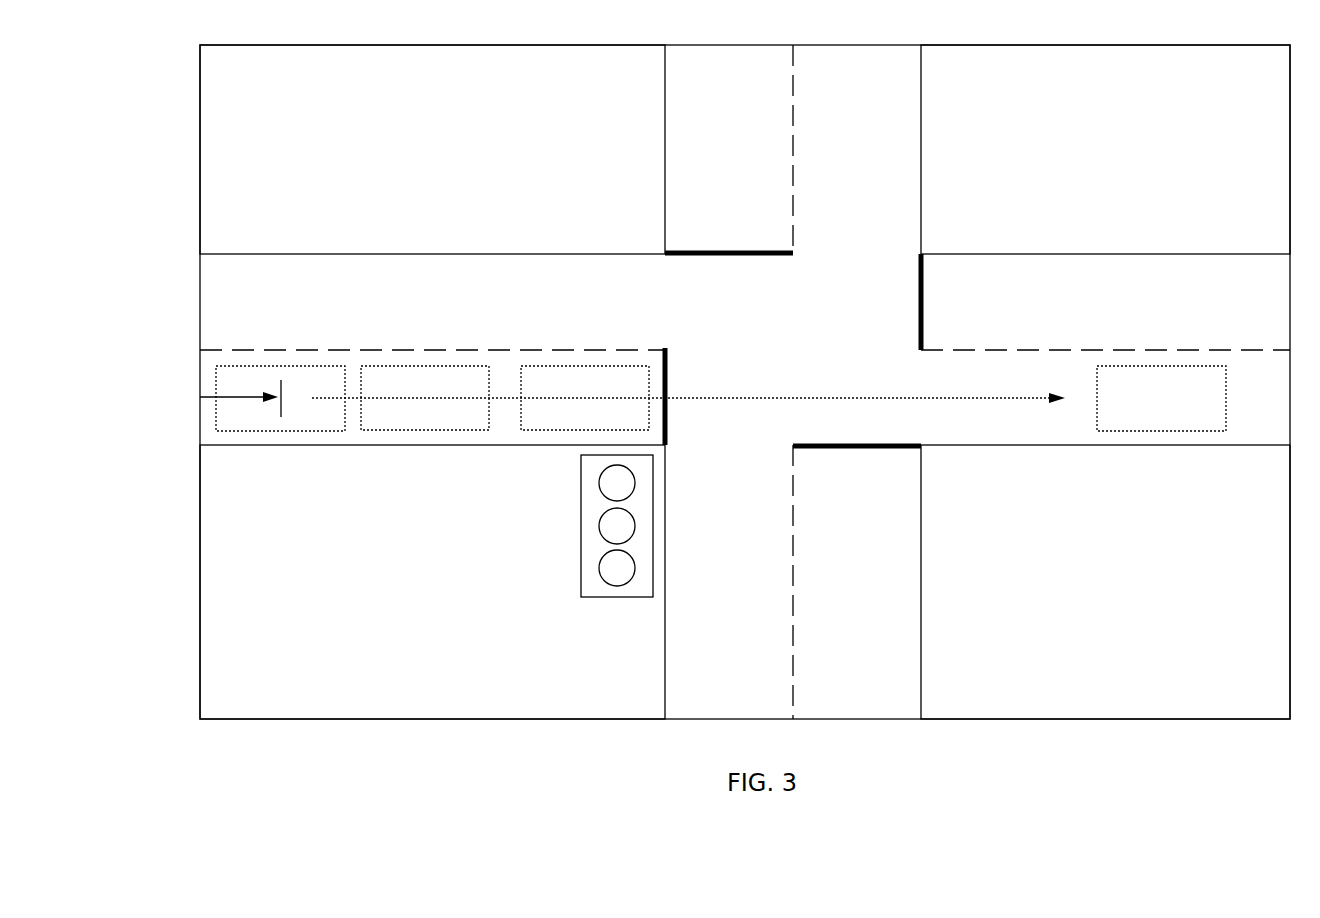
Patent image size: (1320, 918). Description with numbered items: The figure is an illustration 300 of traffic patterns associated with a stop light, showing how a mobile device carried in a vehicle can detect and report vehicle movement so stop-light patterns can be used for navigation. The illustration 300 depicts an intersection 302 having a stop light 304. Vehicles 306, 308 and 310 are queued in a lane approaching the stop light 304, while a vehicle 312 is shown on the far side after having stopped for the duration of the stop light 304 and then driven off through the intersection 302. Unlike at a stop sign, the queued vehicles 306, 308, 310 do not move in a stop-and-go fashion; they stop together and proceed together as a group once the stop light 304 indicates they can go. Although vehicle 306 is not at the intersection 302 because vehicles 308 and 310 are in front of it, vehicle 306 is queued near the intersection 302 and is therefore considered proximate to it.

The illustration 300 is at (188, 128).
The intersection 302 is at (805, 344).
The stop light 304 is at (581, 527).
The vehicle 306 is at (313, 365).
The vehicle 308 is at (425, 365).
The vehicle 310 is at (585, 365).
The vehicle 312 is at (1146, 365).